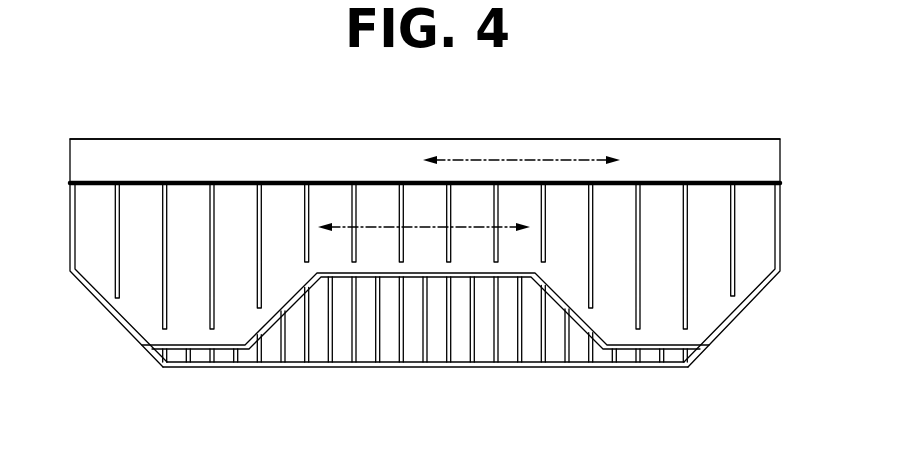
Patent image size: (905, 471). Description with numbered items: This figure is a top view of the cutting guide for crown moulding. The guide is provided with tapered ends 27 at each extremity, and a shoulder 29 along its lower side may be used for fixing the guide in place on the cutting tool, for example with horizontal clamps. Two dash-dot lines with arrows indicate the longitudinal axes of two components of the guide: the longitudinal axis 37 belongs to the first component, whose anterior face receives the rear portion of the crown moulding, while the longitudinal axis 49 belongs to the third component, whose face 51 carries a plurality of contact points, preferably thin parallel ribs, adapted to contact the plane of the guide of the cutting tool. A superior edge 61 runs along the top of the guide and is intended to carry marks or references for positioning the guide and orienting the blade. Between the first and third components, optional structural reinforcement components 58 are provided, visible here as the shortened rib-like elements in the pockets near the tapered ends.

The superior edge 61 is at (112, 147).
The face 51 is at (742, 140).
The tapered end 27 is at (127, 332).
The shoulder 29 is at (442, 367).
The reinforcement components 58 is at (257, 298).
The longitudinal axis 37 is at (372, 227).
The longitudinal axis 49 is at (570, 160).